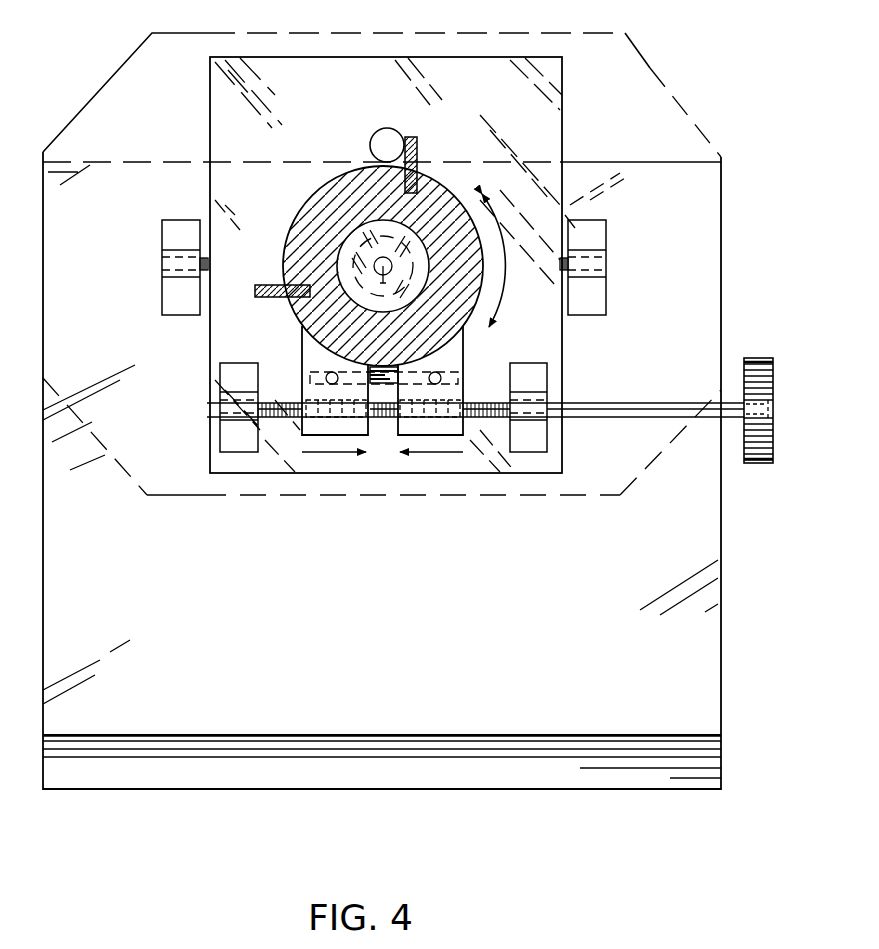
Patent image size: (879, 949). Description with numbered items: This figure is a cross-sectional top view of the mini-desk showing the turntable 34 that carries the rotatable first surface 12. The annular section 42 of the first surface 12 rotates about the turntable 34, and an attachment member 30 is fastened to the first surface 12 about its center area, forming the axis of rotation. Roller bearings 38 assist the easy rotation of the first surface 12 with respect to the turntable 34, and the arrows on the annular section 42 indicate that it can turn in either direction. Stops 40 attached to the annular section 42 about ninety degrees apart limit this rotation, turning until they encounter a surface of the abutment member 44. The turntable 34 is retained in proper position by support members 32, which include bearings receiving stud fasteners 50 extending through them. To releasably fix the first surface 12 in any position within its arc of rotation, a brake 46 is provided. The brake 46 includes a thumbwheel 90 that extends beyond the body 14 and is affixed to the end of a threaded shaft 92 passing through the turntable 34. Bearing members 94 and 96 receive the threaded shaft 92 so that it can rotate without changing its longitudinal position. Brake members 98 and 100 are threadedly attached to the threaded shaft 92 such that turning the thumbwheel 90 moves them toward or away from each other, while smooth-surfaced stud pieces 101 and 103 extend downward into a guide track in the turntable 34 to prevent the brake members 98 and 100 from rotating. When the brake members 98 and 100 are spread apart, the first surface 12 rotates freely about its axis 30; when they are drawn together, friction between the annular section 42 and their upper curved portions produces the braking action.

The first surface 12 is at (660, 72).
The body 14 is at (680, 797).
The attachment member 30 is at (380, 268).
The support member 32 is at (170, 238).
The turntable 34 is at (555, 199).
The roller bearings 38 is at (372, 240).
The stops 40 is at (418, 150).
The annular section 42 is at (316, 222).
The abutment member 44 is at (385, 136).
The brake 46 is at (452, 466).
The stud fasteners 50 is at (168, 292).
The thumbwheel 90 is at (760, 366).
The threaded shaft 92 is at (638, 406).
The bearing member 94 is at (540, 434).
The bearing member 96 is at (232, 434).
The brake member 98 is at (458, 431).
The brake member 100 is at (308, 426).
The stud piece 101 is at (440, 372).
The stud piece 103 is at (330, 372).